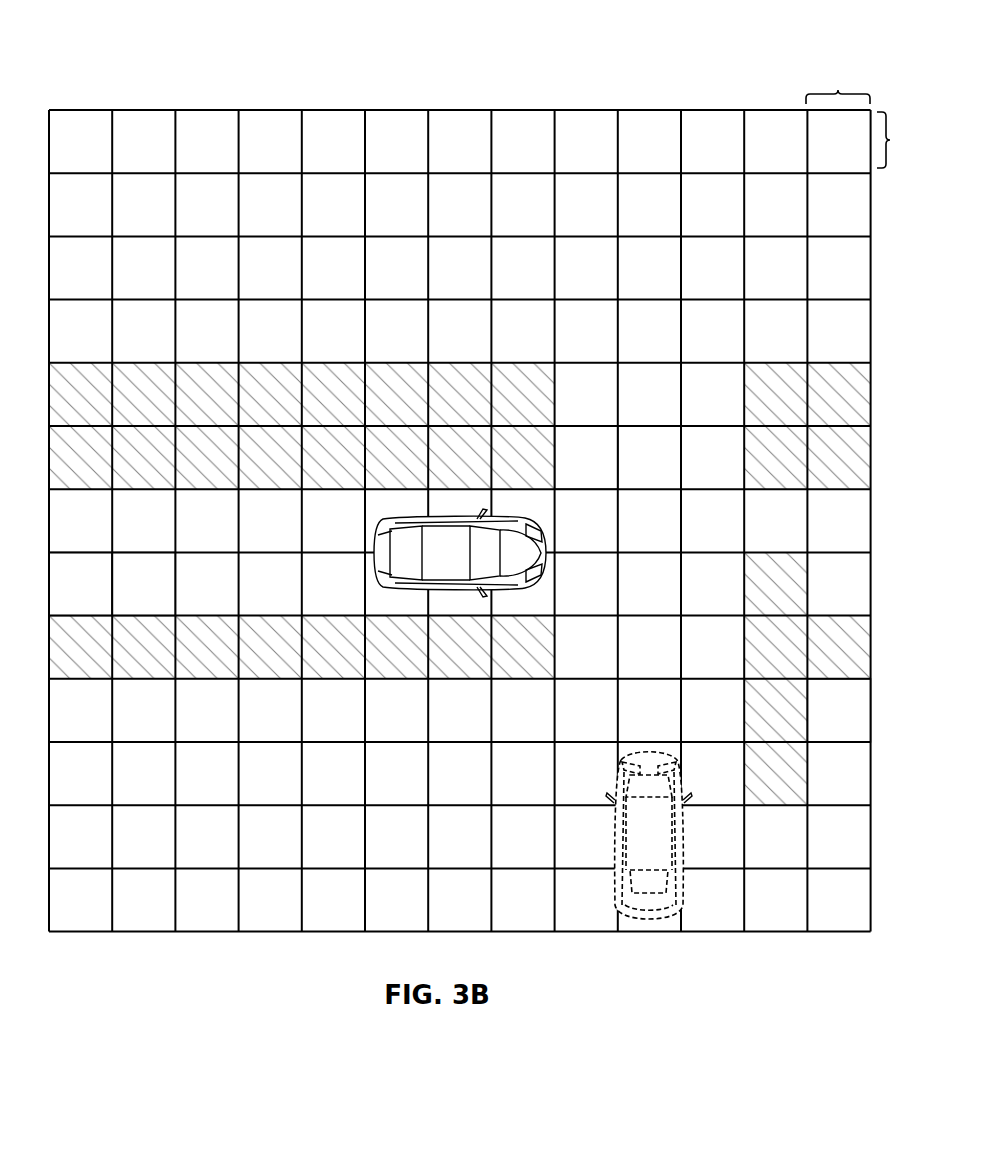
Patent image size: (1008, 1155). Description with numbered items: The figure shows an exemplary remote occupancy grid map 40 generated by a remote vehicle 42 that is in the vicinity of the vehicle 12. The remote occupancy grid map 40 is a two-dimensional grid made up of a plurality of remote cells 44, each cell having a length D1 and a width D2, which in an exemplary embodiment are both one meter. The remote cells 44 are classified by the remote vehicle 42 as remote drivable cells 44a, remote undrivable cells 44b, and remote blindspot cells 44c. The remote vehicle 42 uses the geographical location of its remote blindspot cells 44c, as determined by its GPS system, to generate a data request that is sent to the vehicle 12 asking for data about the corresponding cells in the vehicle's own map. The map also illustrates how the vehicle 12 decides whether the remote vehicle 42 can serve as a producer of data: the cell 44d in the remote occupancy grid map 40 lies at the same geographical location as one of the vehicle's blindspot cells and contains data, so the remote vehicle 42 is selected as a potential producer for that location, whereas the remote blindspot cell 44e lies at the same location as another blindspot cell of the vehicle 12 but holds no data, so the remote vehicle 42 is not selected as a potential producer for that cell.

The remote occupancy grid map 40 is at (134, 70).
The remote vehicle 42 is at (460, 563).
The vehicle 12 is at (636, 857).
The remote cells 44 is at (111, 565).
The remote drivable cells 44a is at (80, 582).
The remote undrivable cells 44b is at (838, 396).
The remote blindspot cells 44c is at (585, 472).
The cell 44d is at (790, 574).
The remote blindspot cell 44e is at (843, 710).
The length D1 is at (838, 85).
The width D2 is at (899, 140).